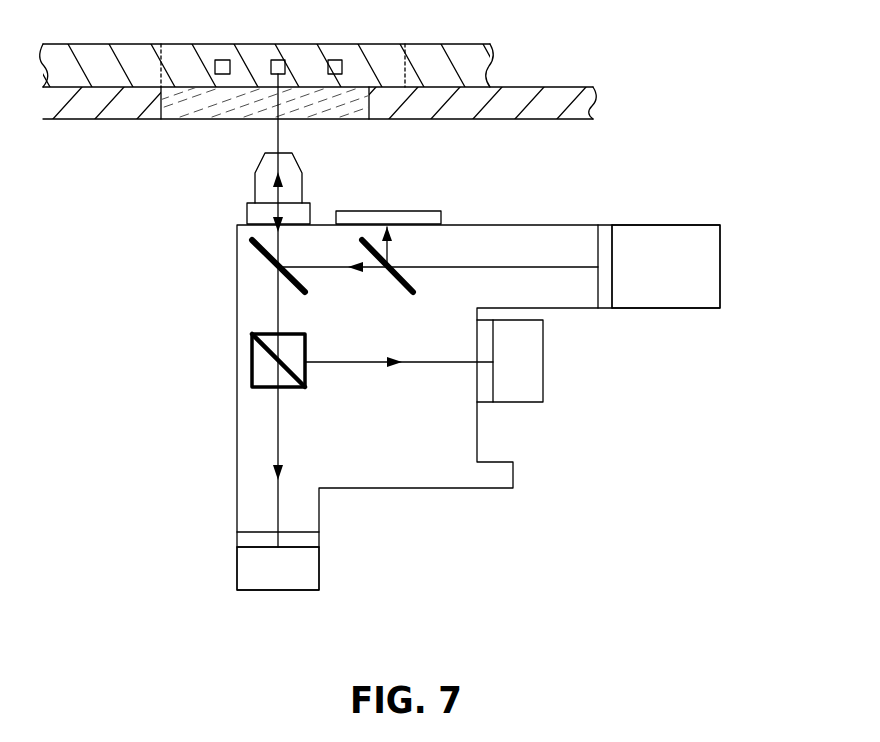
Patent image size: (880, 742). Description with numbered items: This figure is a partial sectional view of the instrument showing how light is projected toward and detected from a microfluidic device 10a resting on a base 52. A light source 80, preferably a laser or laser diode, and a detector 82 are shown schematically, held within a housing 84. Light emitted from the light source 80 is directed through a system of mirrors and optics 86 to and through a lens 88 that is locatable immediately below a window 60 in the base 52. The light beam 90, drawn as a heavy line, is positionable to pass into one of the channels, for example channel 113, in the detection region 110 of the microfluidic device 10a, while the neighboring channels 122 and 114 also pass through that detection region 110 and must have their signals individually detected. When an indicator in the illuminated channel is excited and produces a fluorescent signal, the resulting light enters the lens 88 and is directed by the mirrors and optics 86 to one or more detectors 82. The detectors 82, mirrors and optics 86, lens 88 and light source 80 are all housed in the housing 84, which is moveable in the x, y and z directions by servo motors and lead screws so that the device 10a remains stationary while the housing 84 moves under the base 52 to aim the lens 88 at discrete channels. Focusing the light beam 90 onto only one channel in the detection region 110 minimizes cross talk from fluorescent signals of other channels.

The microfluidic device 10a is at (477, 25).
The base 52 is at (495, 120).
The window 60 is at (337, 120).
The detection region 110 is at (180, 43).
The channel 122 is at (221, 60).
The channel 113 is at (278, 60).
The channel 114 is at (336, 60).
The lens 88 is at (302, 188).
The housing 84 is at (237, 433).
The light source 80 is at (708, 265).
The detector 82 is at (530, 372).
The light beam 90 is at (280, 320).
The mirrors and optics 86 is at (217, 313).